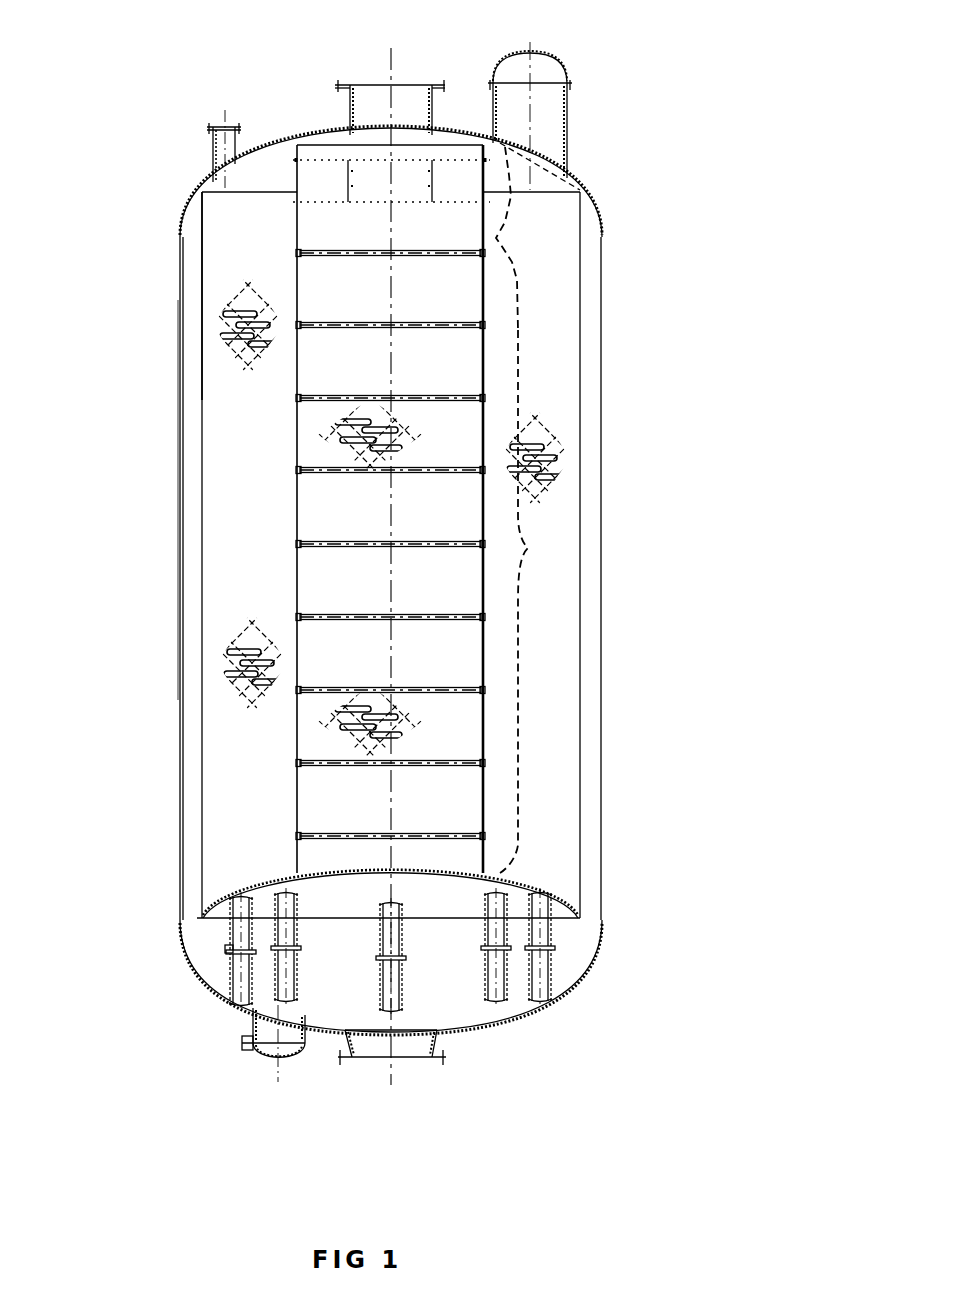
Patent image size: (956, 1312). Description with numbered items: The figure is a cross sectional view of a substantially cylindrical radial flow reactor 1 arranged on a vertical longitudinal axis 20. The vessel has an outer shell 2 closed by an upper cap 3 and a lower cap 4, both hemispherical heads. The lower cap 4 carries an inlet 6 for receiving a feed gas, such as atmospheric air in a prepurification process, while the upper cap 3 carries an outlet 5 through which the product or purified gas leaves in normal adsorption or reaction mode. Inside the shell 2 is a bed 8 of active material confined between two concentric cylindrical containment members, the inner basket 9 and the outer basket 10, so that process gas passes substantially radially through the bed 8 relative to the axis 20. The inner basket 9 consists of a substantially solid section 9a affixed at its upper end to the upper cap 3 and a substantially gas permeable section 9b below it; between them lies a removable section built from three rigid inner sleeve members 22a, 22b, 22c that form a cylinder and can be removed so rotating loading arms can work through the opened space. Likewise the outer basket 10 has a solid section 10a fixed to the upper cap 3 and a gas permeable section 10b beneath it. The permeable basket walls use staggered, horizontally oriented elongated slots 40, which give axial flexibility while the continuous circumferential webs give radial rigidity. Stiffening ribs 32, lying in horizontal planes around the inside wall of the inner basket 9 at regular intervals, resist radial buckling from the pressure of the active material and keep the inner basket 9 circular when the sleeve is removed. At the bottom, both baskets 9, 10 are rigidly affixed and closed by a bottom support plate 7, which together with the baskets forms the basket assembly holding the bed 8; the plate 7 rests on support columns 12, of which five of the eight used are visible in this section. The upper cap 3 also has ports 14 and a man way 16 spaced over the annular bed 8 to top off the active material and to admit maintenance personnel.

The radial flow reactor 1 is at (617, 360).
The outer shell 2 is at (178, 523).
The upper cap 3 is at (578, 188).
The lower cap 4 is at (591, 973).
The outlet 5 is at (333, 86).
The inlet 6 is at (335, 1057).
The bottom support plate 7 is at (454, 875).
The bed 8 is at (224, 766).
The inner basket 9 is at (298, 325).
The solid section 9a is at (527, 200).
The gas permeable section 9b is at (540, 562).
The outer basket 10 is at (585, 548).
The solid section 10a is at (190, 225).
The gas permeable section 10b is at (199, 320).
The support columns 12 is at (552, 940).
The ports 14 is at (205, 128).
The man way 16 is at (548, 62).
The longitudinal axis 20 is at (395, 52).
The inner sleeve member 22a is at (332, 200).
The inner sleeve member 22b is at (372, 200).
The inner sleeve member 22c is at (465, 200).
The stiffening ribs 32 is at (372, 540).
The elongated slots 40 is at (240, 658).